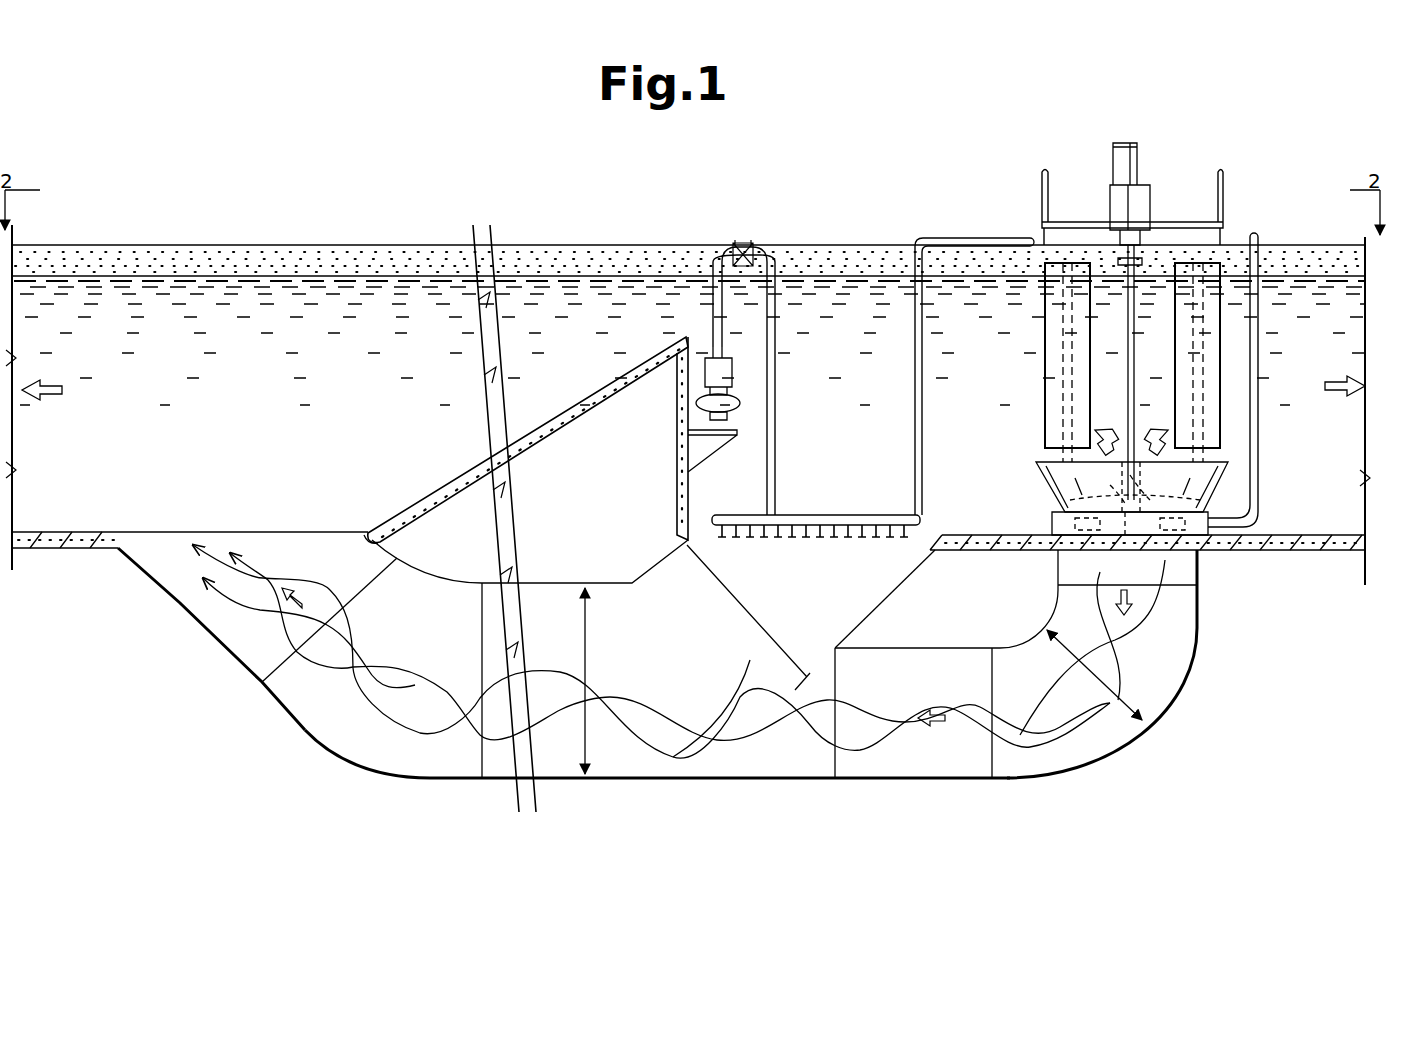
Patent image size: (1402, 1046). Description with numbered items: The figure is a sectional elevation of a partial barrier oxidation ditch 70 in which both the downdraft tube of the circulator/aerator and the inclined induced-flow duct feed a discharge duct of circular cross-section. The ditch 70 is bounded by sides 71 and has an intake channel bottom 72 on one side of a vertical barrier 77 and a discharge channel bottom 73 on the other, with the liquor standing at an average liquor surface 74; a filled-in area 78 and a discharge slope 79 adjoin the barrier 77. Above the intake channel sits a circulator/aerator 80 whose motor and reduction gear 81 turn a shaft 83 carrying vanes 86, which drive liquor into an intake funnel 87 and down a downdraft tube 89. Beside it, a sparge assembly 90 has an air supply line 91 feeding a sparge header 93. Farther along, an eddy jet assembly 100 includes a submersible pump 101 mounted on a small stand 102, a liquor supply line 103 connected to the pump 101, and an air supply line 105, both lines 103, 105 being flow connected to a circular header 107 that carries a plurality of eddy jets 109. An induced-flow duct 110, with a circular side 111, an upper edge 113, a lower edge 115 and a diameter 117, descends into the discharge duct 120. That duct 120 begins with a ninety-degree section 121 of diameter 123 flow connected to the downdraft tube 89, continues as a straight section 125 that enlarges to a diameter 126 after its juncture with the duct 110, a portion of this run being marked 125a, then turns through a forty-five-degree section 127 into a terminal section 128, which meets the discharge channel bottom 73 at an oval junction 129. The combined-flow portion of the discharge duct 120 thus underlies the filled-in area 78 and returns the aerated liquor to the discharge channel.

The barrier oxidation ditch 70 is at (857, 212).
The sides 71 is at (1343, 270).
The intake channel bottom 72 is at (990, 535).
The discharge channel bottom 73 is at (102, 532).
The average liquor surface 74 is at (1297, 275).
The vertical barrier 77 is at (677, 512).
The filled-in area 78 is at (612, 465).
The discharge slope 79 is at (602, 385).
The circulator/aerator 80 is at (1146, 316).
The motor and reduction gear 81 is at (1140, 163).
The shaft 83 is at (1127, 305).
The vanes 86 is at (1047, 358).
The intake funnel 87 is at (1040, 465).
The downdraft tube 89 is at (1197, 585).
The sparge assembly 90 is at (1268, 216).
The air supply line 91 is at (1258, 356).
The sparge header 93 is at (1052, 516).
The eddy jet assembly 100 is at (861, 404).
The submersible pump 101 is at (745, 398).
The small stand 102 is at (737, 437).
The liquor supply line 103 is at (776, 448).
The air supply line 105 is at (915, 403).
The circular header 107 is at (850, 519).
The eddy jets 109 is at (852, 537).
The induced-flow duct 110 is at (745, 628).
The circular side 111 is at (676, 557).
The upper edge 113 is at (925, 550).
The lower edge 115 is at (836, 650).
The diameter 117 is at (723, 598).
The discharge duct 120 is at (1107, 762).
The 90° section 121 is at (1197, 638).
The diameter 123 is at (1062, 645).
The straight section 125 is at (968, 782).
The basin bottom portion 125a is at (573, 570).
The diameter 126 is at (585, 658).
The 45° section 127 is at (297, 732).
The terminal section 128 is at (205, 635).
The oval junction 129 is at (368, 535).